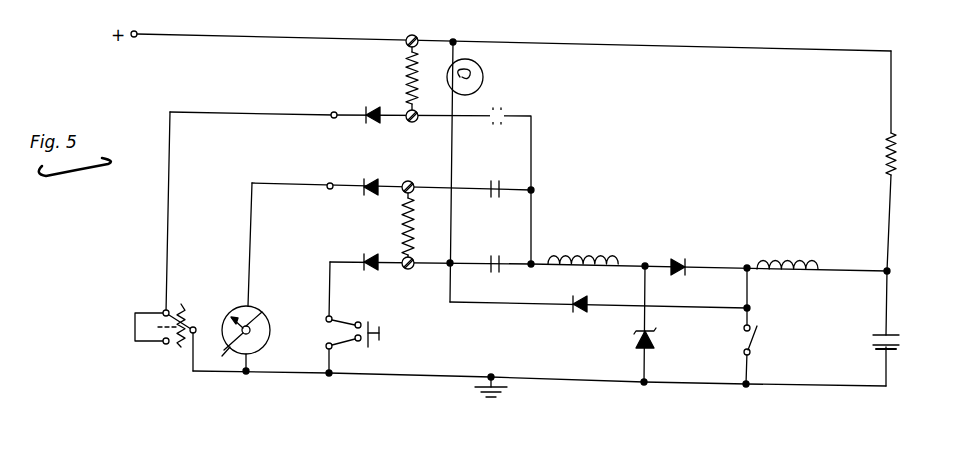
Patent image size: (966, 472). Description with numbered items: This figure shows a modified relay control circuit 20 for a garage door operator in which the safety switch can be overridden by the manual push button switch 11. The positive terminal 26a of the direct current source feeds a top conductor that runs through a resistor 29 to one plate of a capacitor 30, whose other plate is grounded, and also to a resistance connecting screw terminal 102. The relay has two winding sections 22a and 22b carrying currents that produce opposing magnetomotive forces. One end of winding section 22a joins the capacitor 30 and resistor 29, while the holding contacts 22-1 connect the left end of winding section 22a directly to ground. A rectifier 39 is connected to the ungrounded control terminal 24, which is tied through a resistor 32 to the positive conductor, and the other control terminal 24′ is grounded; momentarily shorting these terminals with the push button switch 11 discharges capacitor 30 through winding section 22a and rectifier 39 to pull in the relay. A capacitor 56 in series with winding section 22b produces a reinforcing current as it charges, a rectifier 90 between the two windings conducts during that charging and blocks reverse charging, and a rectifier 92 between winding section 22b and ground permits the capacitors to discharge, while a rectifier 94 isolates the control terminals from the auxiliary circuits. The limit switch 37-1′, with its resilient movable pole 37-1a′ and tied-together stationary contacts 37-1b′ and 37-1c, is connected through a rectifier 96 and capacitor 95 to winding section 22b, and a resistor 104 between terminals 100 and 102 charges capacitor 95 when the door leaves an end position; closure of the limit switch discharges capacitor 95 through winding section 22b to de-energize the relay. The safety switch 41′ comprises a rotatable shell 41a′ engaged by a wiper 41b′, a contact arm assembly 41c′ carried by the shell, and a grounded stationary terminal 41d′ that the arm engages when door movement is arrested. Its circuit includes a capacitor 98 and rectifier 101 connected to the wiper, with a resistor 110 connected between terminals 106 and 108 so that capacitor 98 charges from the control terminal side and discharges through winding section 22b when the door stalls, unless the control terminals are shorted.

The relay control circuit 20 is at (337, 26).
The positive terminal 26a is at (186, 25).
The resistance connecting screw terminal 102 is at (412, 35).
The resistor 104 is at (406, 75).
The resistance connecting screw terminal 100 is at (408, 122).
The resistor 32 is at (483, 72).
The capacitor 95 is at (505, 112).
The rectifier 96 is at (364, 124).
The rectifier 101 is at (364, 182).
The resistance connecting terminal 106 is at (410, 179).
The capacitor 98 is at (500, 181).
The resistor 110 is at (414, 235).
The resistance connecting terminal 108 is at (408, 271).
The rectifier 94 is at (366, 256).
The capacitor 56 is at (502, 256).
The winding section 22b is at (630, 233).
The rectifier 90 is at (683, 262).
The winding section 22a is at (812, 246).
The resistor 29 is at (898, 157).
The capacitor 30 is at (898, 338).
The rectifier 92 is at (652, 340).
The holding contacts 22-1 is at (759, 340).
The rectifier 39 is at (579, 313).
The control terminal 24 is at (333, 316).
The control terminal 24′ is at (326, 347).
The manual push button switch 11 is at (381, 333).
The limit switch 37-1′ is at (122, 328).
The movable pole 37-1a′ is at (220, 300).
The stationary contact 37-1b′ is at (164, 308).
The stationary contact 37-1c is at (164, 346).
The safety switch 41′ is at (232, 302).
The rotatable shell 41a′ is at (312, 329).
The wiper 41b′ is at (294, 281).
The contact arm assembly 41c′ is at (231, 373).
The grounded stationary terminal 41d′ is at (307, 303).